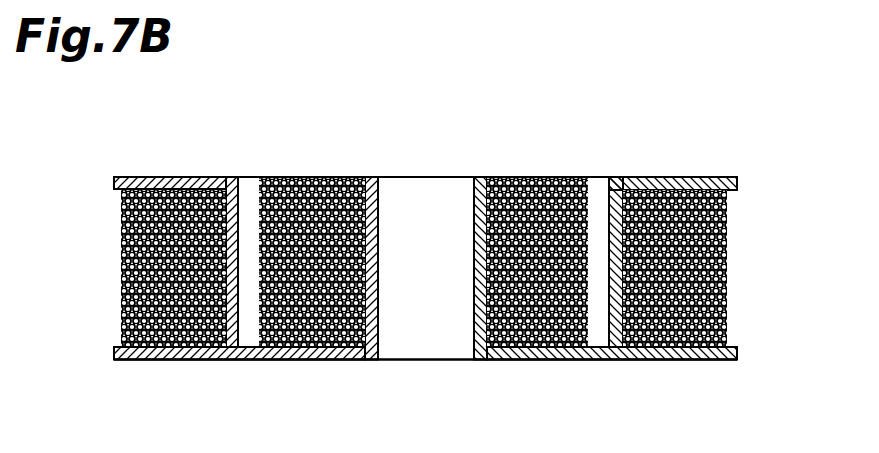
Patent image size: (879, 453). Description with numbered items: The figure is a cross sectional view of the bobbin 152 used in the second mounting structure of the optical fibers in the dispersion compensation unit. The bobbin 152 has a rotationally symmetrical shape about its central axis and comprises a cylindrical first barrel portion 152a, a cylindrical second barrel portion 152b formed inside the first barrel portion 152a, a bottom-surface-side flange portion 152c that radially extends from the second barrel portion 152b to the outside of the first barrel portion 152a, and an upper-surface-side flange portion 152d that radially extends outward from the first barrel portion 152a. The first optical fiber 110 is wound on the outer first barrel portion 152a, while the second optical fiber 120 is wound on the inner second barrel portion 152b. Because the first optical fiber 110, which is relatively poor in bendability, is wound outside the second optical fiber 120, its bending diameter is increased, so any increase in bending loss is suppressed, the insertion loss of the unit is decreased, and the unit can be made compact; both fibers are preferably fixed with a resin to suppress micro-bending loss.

The first optical fiber 110 is at (173, 338).
The second optical fiber 120 is at (295, 338).
The bobbin 152 is at (623, 177).
The first barrel portion 152a is at (610, 330).
The second barrel portion 152b is at (472, 330).
The bottom-surface-side flange portion 152c is at (665, 361).
The upper-surface-side flange portion 152d is at (707, 177).